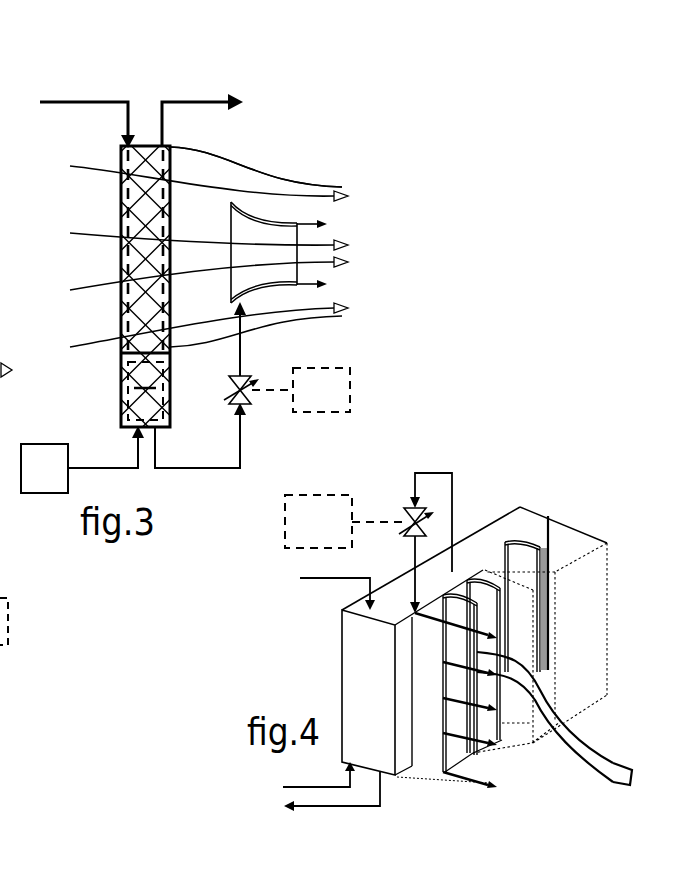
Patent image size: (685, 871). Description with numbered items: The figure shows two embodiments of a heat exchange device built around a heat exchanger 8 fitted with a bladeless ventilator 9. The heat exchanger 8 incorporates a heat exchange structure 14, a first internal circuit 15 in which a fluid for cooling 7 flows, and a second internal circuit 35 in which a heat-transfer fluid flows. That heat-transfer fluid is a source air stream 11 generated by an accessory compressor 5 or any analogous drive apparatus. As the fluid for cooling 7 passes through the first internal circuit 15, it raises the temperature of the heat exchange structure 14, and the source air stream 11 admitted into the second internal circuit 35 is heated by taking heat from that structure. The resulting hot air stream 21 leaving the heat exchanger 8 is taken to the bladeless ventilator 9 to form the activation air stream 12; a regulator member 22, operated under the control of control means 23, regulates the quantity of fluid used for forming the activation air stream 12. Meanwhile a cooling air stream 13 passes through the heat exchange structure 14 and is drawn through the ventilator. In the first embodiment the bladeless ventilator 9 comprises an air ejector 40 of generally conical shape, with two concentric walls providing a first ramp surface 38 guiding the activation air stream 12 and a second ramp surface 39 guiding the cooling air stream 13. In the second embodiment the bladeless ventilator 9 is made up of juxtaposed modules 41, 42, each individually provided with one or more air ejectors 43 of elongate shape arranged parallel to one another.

In FIG. 3, the accessory compressor 5 is at (37, 478).
In FIG. 3, the fluid for cooling 7 is at (141, 109).
In FIG. 4, the fluid for cooling 7 is at (321, 787).
In FIG. 3, the heat exchanger 8 is at (170, 488).
In FIG. 3, the bladeless ventilator 9 is at (297, 158).
In FIG. 4, the bladeless ventilator 9 is at (566, 503).
In FIG. 3, the source air stream 11 is at (106, 447).
In FIG. 4, the source air stream 11 is at (323, 588).
In FIG. 3, the activation air stream 12 is at (323, 283).
In FIG. 4, the activation air stream 12 is at (470, 706).
In FIG. 3, the cooling air stream 13 is at (222, 256).
In FIG. 4, the cooling air stream 13 is at (555, 718).
In FIG. 3, the heat exchange structure 14 is at (121, 150).
In FIG. 4, the heat exchange structure 14 is at (357, 699).
In FIG. 3, the first internal circuit 15 is at (121, 203).
In FIG. 3, the hot air stream 21 is at (213, 385).
In FIG. 4, the hot air stream 21 is at (431, 532).
In FIG. 3, the regulator member 22 is at (221, 388).
In FIG. 4, the regulator member 22 is at (406, 512).
In FIG. 3, the control means 23 is at (309, 398).
In FIG. 4, the control means 23 is at (309, 533).
In FIG. 3, the second internal circuit 35 is at (135, 411).
In FIG. 3, the first ramp surface 38 is at (289, 221).
In FIG. 3, the second ramp surface 39 is at (256, 165).
In FIG. 3, the air ejector 40 is at (231, 208).
In FIG. 4, the juxtaposed module 41 is at (433, 782).
In FIG. 4, the juxtaposed module 42 is at (577, 533).
In FIG. 4, the air ejectors 43 is at (532, 543).